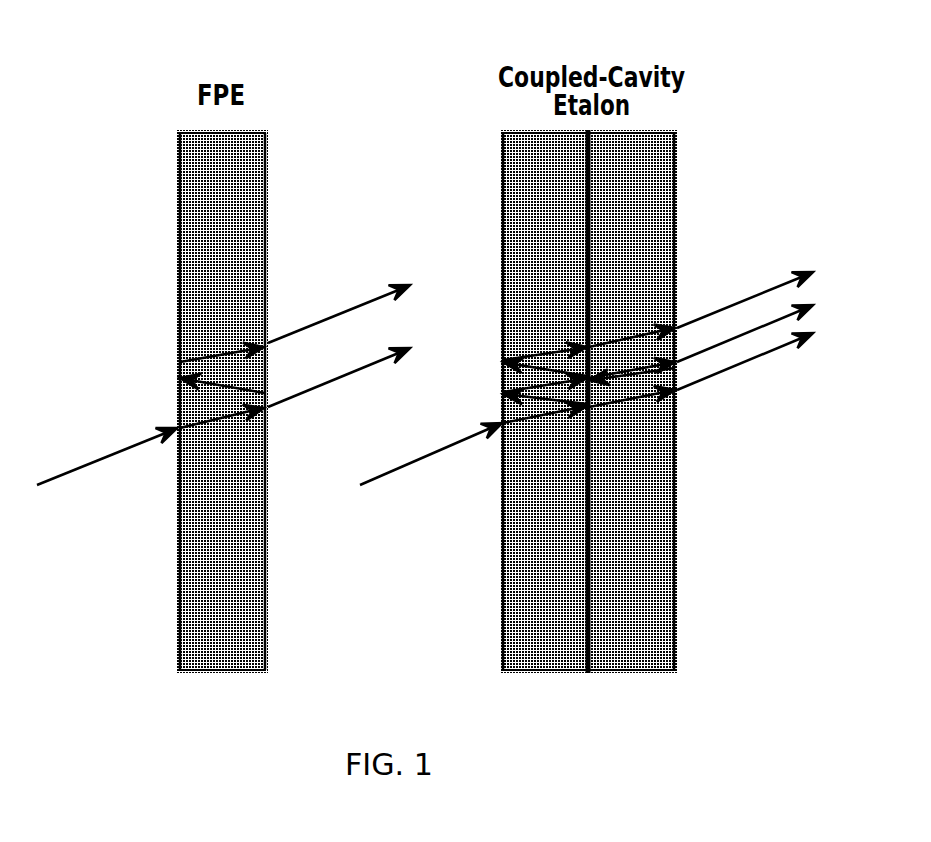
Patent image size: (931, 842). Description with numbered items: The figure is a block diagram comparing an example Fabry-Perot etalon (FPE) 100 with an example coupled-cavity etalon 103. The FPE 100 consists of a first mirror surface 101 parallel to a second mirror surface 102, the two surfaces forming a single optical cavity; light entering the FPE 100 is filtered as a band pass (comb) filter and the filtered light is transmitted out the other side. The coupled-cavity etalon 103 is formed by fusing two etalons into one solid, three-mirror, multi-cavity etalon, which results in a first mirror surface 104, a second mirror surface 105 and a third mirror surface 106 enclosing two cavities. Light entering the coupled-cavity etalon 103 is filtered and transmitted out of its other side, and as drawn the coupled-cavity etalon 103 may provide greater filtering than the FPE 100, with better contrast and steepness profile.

The Fabry-Perot etalon 100 is at (127, 111).
The first mirror surface 101 is at (127, 401).
The second mirror surface 102 is at (306, 401).
The coupled-cavity etalon 103 is at (479, 112).
The first mirror surface 104 is at (448, 401).
The second mirror surface 105 is at (665, 385).
The third mirror surface 106 is at (720, 401).